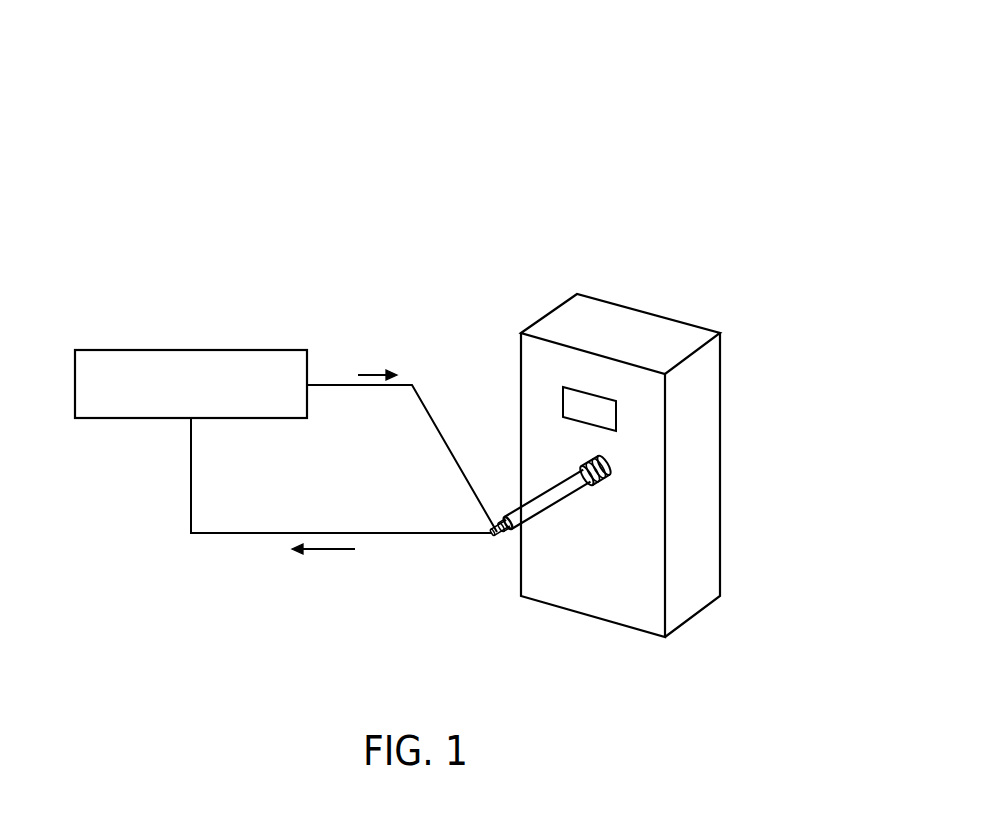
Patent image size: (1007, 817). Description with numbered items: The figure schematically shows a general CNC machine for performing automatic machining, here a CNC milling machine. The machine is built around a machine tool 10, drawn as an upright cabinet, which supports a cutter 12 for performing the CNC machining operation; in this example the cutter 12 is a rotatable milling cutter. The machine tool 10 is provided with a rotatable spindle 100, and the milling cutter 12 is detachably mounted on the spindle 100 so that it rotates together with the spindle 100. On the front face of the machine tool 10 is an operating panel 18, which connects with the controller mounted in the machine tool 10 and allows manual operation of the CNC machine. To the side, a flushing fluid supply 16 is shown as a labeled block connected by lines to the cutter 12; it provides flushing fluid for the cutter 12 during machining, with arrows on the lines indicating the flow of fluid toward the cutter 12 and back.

The machine tool 10 is at (717, 527).
The cutter 12 is at (576, 526).
The flushing fluid supply 16 is at (190, 350).
The operating panel 18 is at (607, 417).
The spindle 100 is at (608, 485).